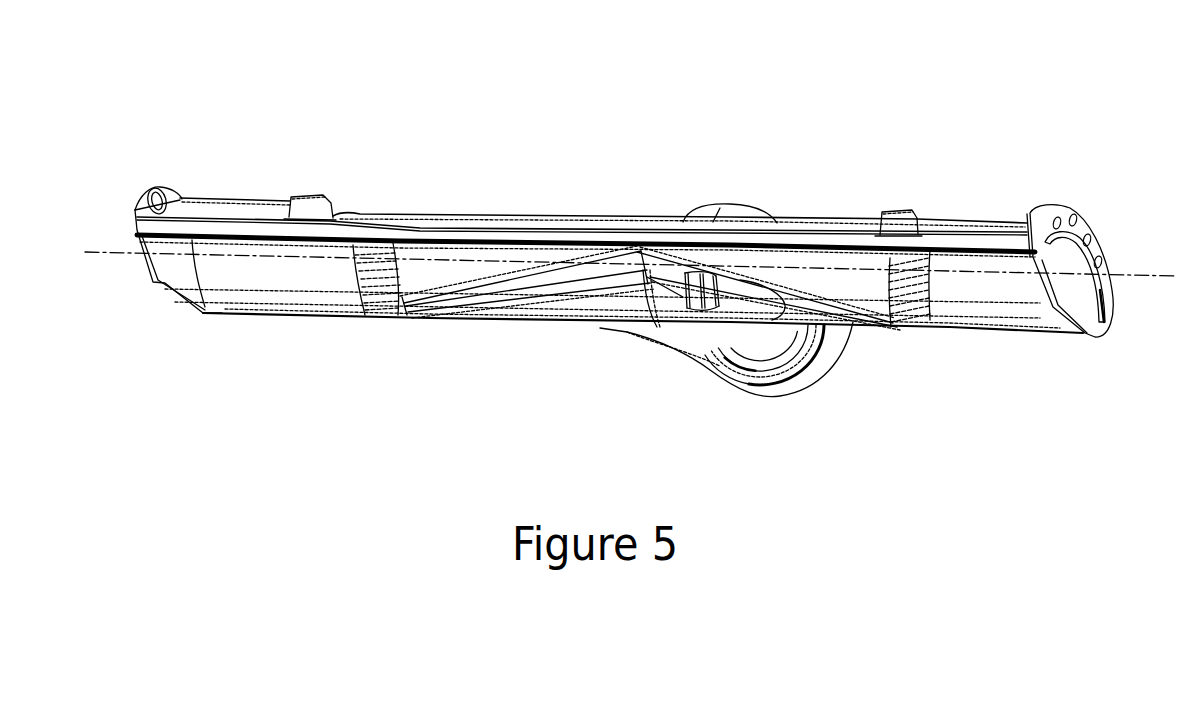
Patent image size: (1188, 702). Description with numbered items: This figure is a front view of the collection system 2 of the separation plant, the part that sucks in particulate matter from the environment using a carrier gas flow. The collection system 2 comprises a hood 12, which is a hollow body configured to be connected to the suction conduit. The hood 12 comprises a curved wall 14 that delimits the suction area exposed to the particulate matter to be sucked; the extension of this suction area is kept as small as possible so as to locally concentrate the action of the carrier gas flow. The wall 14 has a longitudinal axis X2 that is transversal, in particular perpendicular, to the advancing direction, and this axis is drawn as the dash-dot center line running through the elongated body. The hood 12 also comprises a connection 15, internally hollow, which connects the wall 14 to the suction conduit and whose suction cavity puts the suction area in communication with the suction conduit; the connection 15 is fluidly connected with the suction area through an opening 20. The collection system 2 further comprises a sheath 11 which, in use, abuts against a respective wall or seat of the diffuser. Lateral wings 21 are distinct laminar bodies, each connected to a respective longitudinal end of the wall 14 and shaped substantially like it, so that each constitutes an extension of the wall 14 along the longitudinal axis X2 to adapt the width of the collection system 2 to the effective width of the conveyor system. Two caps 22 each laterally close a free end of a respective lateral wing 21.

The collection system 2 is at (678, 163).
The sheath 11 is at (238, 233).
The hood 12 is at (837, 368).
The wall 14 is at (572, 214).
The connection 15 is at (798, 405).
The opening 20 is at (595, 289).
The lateral wings 21 is at (237, 198).
The caps 22 is at (133, 212).
The longitudinal axis X2 is at (1132, 276).